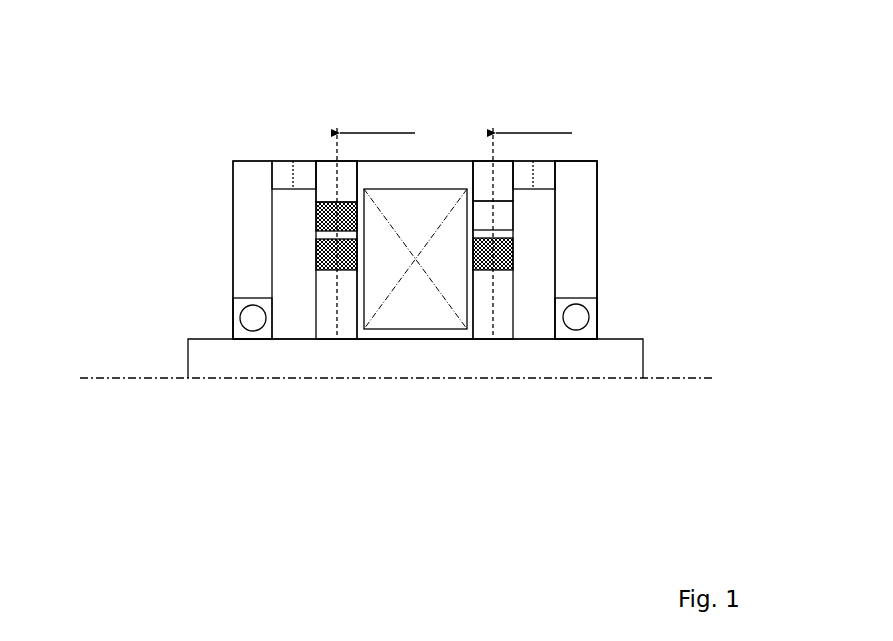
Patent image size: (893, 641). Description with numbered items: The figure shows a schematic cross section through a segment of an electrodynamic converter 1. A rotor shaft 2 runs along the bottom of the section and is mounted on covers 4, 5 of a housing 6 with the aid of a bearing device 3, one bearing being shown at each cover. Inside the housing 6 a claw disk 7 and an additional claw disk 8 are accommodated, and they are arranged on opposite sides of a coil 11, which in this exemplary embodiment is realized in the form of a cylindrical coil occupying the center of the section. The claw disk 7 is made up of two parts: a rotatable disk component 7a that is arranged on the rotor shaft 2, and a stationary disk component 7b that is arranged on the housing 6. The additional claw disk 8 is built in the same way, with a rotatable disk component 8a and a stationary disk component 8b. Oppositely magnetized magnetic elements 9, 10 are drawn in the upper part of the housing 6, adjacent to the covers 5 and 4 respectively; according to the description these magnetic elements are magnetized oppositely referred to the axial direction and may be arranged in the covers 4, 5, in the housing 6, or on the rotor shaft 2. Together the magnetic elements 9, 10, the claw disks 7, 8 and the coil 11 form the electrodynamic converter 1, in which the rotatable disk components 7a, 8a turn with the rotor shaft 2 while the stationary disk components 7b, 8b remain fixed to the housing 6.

The electrodynamic converter 1 is at (723, 92).
The rotor shaft 2 is at (607, 350).
The bearing device 3 is at (253, 315).
The cover 4 is at (570, 212).
The cover 5 is at (242, 193).
The housing 6 is at (575, 173).
The claw disk 7 is at (328, 282).
The rotatable disk component 7a is at (330, 302).
The stationary disk component 7b is at (327, 175).
The additional claw disk 8 is at (493, 285).
The rotatable disk component 8a is at (478, 303).
The stationary disk component 8b is at (485, 178).
The magnetic element 9 is at (281, 167).
The magnetic element 10 is at (542, 172).
The coil 11 is at (413, 292).